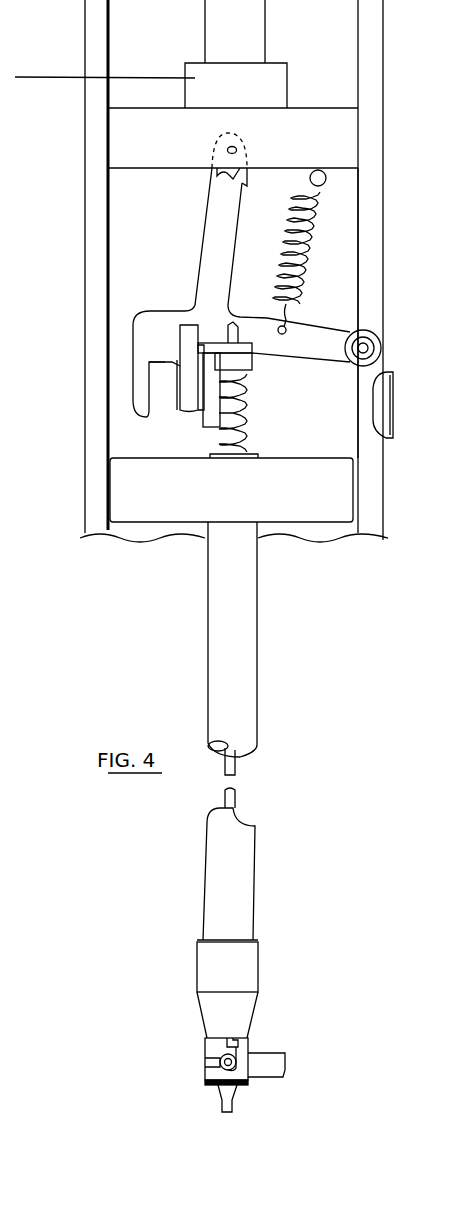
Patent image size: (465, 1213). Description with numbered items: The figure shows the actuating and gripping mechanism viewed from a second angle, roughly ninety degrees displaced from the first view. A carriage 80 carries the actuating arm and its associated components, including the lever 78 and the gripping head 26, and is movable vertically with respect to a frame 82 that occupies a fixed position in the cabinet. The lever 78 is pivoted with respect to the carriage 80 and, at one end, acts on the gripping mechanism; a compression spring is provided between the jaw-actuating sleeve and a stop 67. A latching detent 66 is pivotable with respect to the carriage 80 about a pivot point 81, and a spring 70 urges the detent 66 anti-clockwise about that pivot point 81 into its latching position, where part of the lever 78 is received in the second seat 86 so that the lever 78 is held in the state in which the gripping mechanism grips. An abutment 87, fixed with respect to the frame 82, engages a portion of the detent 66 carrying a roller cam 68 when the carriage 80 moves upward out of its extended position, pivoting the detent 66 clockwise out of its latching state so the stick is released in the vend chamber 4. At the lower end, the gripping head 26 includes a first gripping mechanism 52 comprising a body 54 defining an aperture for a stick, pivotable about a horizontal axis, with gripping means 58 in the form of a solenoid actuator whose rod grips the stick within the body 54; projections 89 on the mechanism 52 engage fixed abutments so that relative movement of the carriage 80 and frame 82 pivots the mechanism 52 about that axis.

The vend chamber 4 is at (193, 661).
The gripping head 26 is at (155, 960).
The first gripping mechanism 52 is at (200, 1077).
The body 54 is at (213, 1057).
The gripping means 58 is at (284, 1072).
The latching detent 66 is at (200, 253).
The stop 67 is at (242, 362).
The roller cam 68 is at (356, 367).
The spring 70 is at (292, 248).
The lever 78 is at (192, 411).
The carriage 80 is at (166, 212).
The pivot point 81 is at (236, 147).
The frame 82 is at (95, 250).
The second seat 86 is at (163, 365).
The abutment 87 is at (377, 405).
The projections 89 is at (243, 1045).